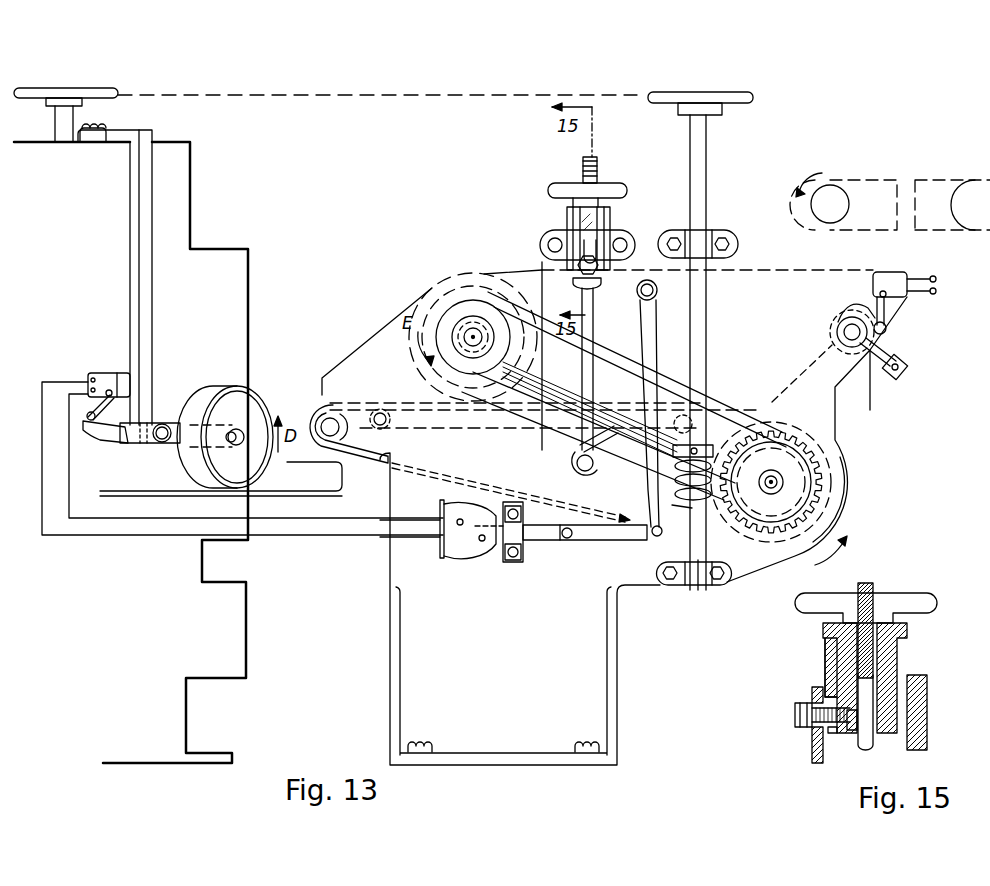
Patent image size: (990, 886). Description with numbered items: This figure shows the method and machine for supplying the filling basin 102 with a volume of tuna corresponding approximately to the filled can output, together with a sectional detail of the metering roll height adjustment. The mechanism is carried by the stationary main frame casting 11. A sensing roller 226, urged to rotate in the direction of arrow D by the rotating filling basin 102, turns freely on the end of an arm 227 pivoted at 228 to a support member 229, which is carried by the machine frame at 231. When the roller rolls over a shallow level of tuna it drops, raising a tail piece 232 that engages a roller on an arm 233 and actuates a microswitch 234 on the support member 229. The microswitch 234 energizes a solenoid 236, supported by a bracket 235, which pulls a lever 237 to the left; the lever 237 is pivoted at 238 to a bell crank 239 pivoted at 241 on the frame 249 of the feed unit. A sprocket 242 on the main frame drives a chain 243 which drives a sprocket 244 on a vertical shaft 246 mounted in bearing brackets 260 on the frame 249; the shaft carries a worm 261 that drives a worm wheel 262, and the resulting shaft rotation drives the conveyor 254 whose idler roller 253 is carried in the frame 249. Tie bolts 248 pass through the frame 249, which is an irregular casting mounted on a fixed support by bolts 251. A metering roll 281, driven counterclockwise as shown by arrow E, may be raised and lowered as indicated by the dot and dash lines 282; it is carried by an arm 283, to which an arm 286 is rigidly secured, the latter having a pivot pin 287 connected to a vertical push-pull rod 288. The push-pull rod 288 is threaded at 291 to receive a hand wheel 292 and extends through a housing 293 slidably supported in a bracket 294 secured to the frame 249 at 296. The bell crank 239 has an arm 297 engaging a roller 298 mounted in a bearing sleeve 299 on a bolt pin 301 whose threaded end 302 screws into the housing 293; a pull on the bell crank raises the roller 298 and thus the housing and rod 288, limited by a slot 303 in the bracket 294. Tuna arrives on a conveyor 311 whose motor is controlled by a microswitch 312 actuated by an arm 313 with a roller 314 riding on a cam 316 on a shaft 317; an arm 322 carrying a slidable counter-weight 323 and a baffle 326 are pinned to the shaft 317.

In FIG. 13, the main frame casting 11 is at (186, 722).
In FIG. 13, the filling basin 102 is at (221, 479).
In FIG. 13, the sensing roller 226 is at (255, 393).
In FIG. 13, the arm 227 is at (176, 420).
In FIG. 13, the pivot 228 is at (148, 446).
In FIG. 13, the support member 229 is at (150, 290).
In FIG. 13, the frame connection 231 is at (98, 144).
In FIG. 13, the tail piece 232 is at (100, 441).
In FIG. 13, the arm 233 is at (109, 407).
In FIG. 13, the microswitch 234 is at (108, 372).
In FIG. 13, the bracket 235 is at (515, 564).
In FIG. 13, the solenoid 236 is at (475, 502).
In FIG. 13, the lever 237 is at (598, 530).
In FIG. 13, the pivot 238 is at (652, 537).
In FIG. 13, the bell crank 239 is at (654, 324).
In FIG. 13, the pivot 241 is at (657, 290).
In FIG. 13, the sprocket 242 is at (66, 88).
In FIG. 13, the chain 243 is at (326, 94).
In FIG. 13, the sprocket 244 is at (708, 94).
In FIG. 13, the vertical shaft 246 is at (707, 180).
In FIG. 13, the tie bolts 248 is at (384, 428).
In FIG. 13, the feed unit frame 249 is at (390, 607).
In FIG. 15, the feed unit frame 249 is at (928, 724).
In FIG. 13, the bolts 251 is at (422, 742).
In FIG. 13, the idler roller 253 is at (316, 418).
In FIG. 13, the conveyor 254 is at (383, 400).
In FIG. 13, the bearing brackets 260 is at (722, 233).
In FIG. 13, the worm 261 is at (690, 587).
In FIG. 13, the worm wheel 262 is at (848, 487).
In FIG. 13, the metering roll 281 is at (482, 287).
In FIG. 13, the dot and dash lines 282 is at (445, 278).
In FIG. 13, the arm 283 is at (600, 392).
In FIG. 13, the arm 286 is at (607, 438).
In FIG. 13, the pivot pin 287 is at (591, 473).
In FIG. 13, the push-pull rod 288 is at (594, 334).
In FIG. 15, the push-pull rod 288 is at (863, 745).
In FIG. 13, the threads 291 is at (597, 168).
In FIG. 15, the threads 291 is at (875, 591).
In FIG. 13, the hand wheel 292 is at (598, 191).
In FIG. 15, the hand wheel 292 is at (910, 599).
In FIG. 13, the housing 293 is at (627, 217).
In FIG. 15, the housing 293 is at (902, 661).
In FIG. 15, the bracket 294 is at (900, 673).
In FIG. 13, the frame securement 296 is at (638, 232).
In FIG. 13, the bell crank arm 297 is at (605, 281).
In FIG. 15, the bell crank arm 297 is at (818, 764).
In FIG. 13, the roller 298 is at (582, 292).
In FIG. 15, the roller 298 is at (813, 691).
In FIG. 15, the bearing sleeve 299 is at (833, 735).
In FIG. 15, the bolt pin 301 is at (800, 711).
In FIG. 15, the threaded end 302 is at (855, 718).
In FIG. 13, the slot 303 is at (495, 320).
In FIG. 15, the slot 303 is at (828, 688).
In FIG. 13, the conveyor 311 is at (910, 177).
In FIG. 13, the microswitch 312 is at (900, 273).
In FIG. 13, the arm 313 is at (890, 315).
In FIG. 13, the roller 314 is at (890, 331).
In FIG. 13, the cam 316 is at (848, 314).
In FIG. 13, the shaft 317 is at (848, 348).
In FIG. 13, the arm 322 is at (890, 350).
In FIG. 13, the counter-weight 323 is at (903, 368).
In FIG. 13, the baffle 326 is at (790, 374).